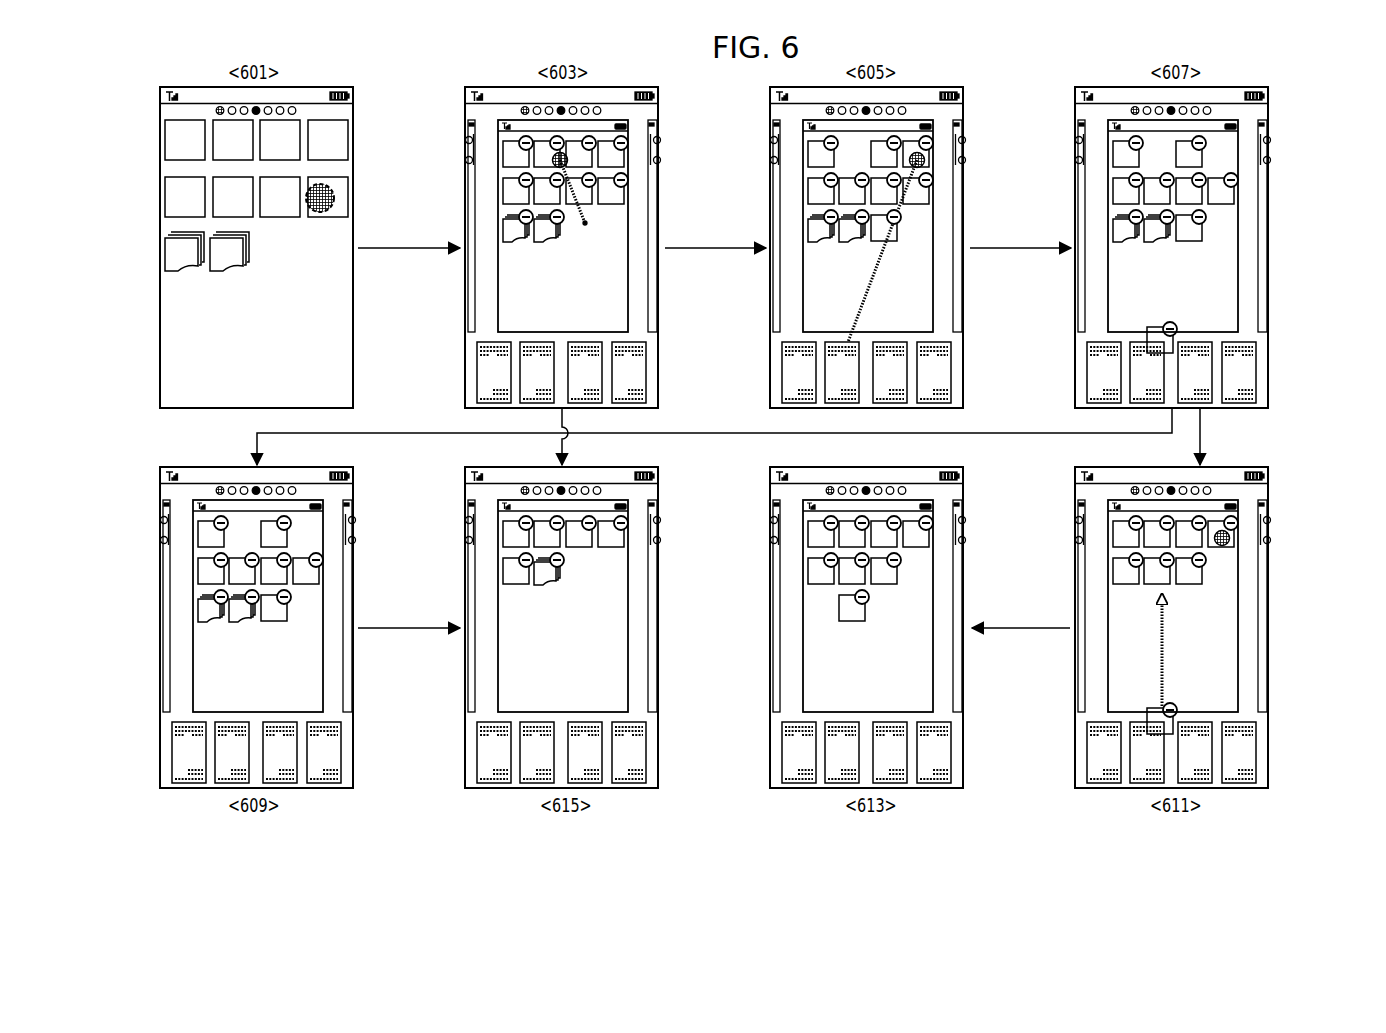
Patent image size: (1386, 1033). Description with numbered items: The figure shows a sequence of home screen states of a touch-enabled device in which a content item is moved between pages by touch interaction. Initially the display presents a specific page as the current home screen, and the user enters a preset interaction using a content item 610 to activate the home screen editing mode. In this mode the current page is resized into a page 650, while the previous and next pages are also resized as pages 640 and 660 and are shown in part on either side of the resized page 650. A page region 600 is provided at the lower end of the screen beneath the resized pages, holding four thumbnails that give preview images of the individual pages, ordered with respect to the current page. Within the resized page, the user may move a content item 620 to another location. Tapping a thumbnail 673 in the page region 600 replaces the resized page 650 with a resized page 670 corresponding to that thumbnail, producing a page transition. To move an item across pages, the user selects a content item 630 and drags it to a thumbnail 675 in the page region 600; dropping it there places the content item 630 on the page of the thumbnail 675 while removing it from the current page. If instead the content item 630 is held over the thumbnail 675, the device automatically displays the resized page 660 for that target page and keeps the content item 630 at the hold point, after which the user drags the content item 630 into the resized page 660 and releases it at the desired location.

The page region 600 is at (714, 562).
The content item 610 is at (342, 197).
The content item 620 is at (540, 145).
The content item 630 is at (913, 145).
The resized page 640 is at (472, 273).
The resized page 650 is at (520, 300).
The resized page 660 is at (655, 276).
The resized page 670 is at (520, 683).
The thumbnail 673 is at (598, 372).
The thumbnail 675 is at (848, 372).